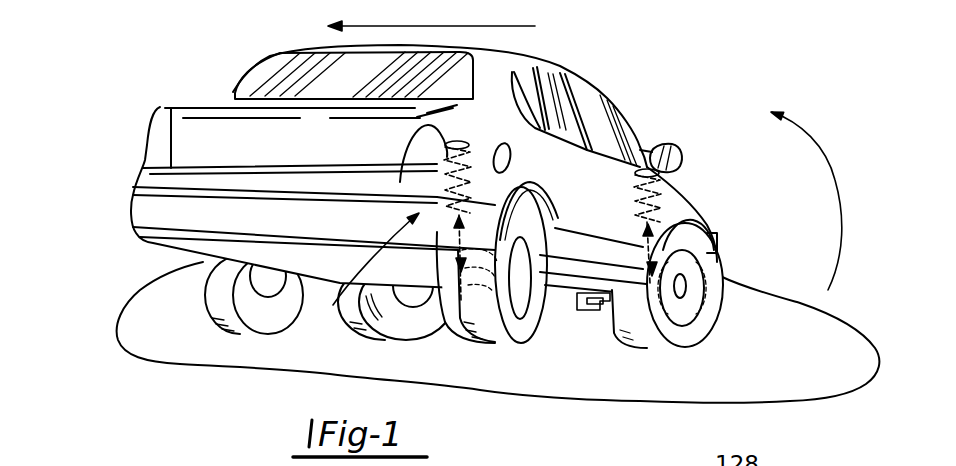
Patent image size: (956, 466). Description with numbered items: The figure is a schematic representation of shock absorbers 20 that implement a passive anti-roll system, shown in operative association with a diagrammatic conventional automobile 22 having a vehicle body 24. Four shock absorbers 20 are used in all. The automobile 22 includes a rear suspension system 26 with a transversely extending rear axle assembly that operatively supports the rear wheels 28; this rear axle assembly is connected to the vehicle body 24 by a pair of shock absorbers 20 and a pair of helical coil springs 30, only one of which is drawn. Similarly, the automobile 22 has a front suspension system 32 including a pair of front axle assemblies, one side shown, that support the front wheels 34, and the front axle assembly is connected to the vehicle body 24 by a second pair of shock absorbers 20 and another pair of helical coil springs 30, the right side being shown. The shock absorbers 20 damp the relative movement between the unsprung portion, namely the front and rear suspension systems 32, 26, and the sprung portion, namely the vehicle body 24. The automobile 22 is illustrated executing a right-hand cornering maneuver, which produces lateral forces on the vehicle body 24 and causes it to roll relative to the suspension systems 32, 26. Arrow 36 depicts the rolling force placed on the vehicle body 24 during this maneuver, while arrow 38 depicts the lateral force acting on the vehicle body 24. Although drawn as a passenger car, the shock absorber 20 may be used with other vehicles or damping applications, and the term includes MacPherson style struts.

The shock absorbers 20 is at (660, 232).
The automobile 22 is at (626, 92).
The vehicle body 24 is at (212, 142).
The rear suspension system 26 is at (359, 282).
The rear wheels 28 is at (514, 328).
The helical coil springs 30 is at (433, 190).
The front suspension system 32 is at (599, 318).
The front wheels 34 is at (703, 327).
The arrow 36 is at (833, 178).
The arrow 38 is at (513, 30).